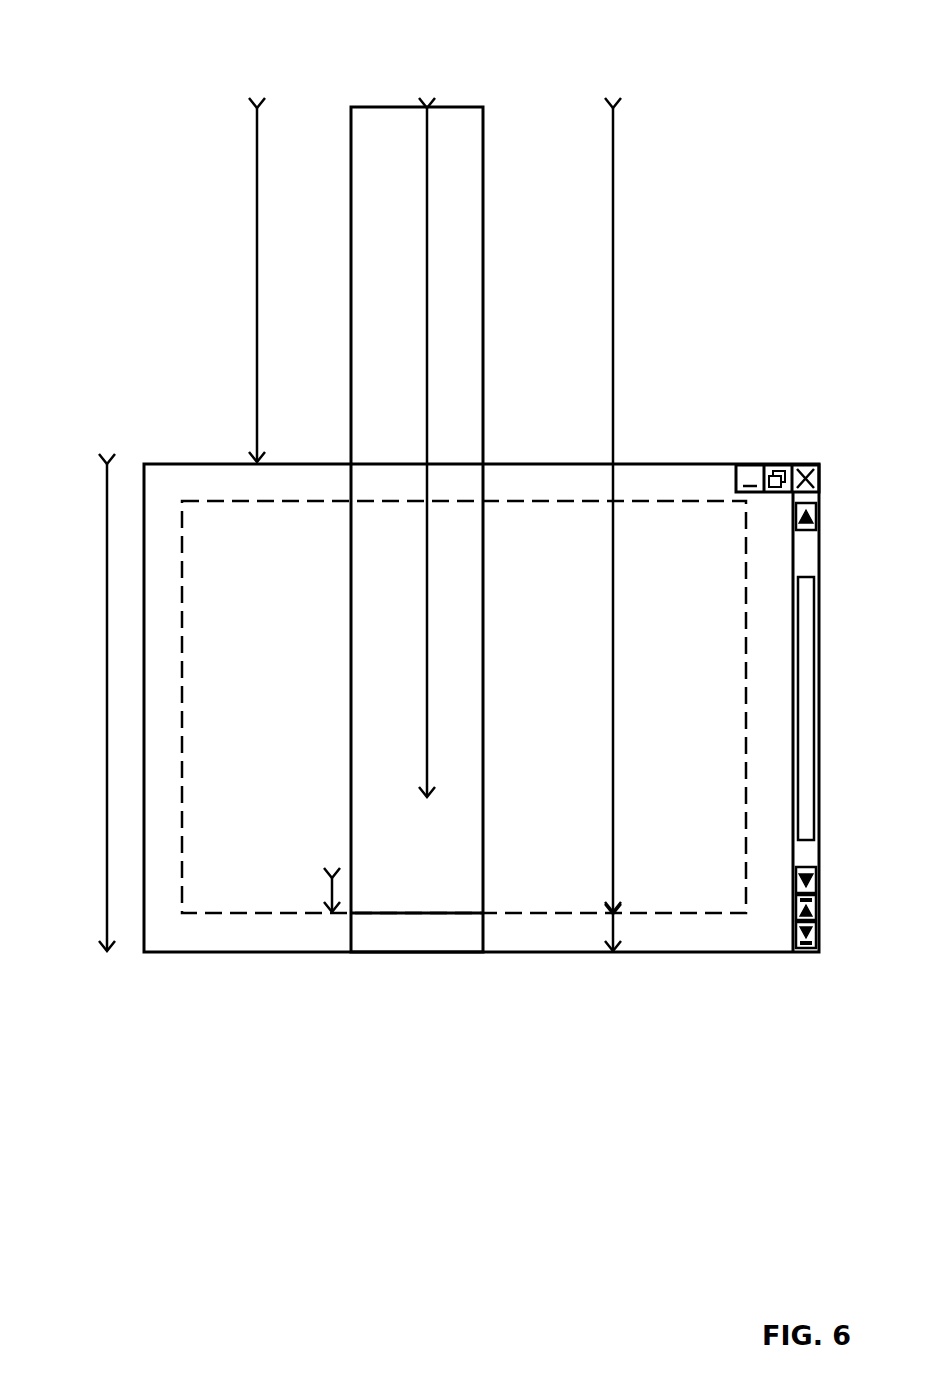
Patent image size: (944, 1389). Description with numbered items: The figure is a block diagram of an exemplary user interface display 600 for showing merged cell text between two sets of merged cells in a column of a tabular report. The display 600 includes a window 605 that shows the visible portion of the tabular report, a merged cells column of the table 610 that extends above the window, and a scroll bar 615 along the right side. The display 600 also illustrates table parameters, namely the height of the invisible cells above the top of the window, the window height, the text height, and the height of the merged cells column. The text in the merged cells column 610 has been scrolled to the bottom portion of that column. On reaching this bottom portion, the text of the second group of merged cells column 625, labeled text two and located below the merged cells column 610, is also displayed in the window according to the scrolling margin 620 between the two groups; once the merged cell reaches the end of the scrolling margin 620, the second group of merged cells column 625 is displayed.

The display 600 is at (148, 74).
The window 605 is at (671, 464).
The merged cells column 610 is at (484, 597).
The scroll bar 615 is at (800, 577).
The scrolling margin 620 is at (746, 633).
The second group of merged cells column 625 is at (443, 953).